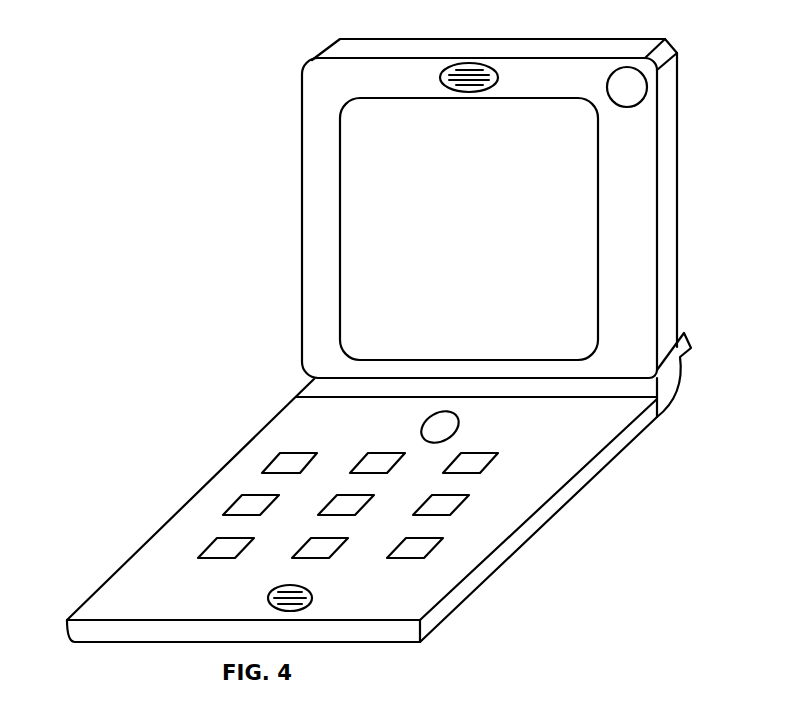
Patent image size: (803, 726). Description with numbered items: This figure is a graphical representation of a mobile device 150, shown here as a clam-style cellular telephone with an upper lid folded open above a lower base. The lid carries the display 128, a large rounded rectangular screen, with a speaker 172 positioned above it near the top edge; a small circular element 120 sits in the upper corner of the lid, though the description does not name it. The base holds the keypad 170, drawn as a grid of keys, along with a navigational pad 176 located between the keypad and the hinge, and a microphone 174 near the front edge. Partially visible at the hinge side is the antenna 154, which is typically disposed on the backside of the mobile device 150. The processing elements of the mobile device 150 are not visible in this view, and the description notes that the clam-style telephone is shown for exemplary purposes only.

The mobile device 150 is at (112, 339).
The antenna 154 is at (688, 334).
The display 128 is at (340, 197).
The speaker 172 is at (440, 78).
The camera lens 120 is at (647, 88).
The navigational pad 176 is at (458, 432).
The keypad 170 is at (237, 481).
The microphone 174 is at (268, 598).